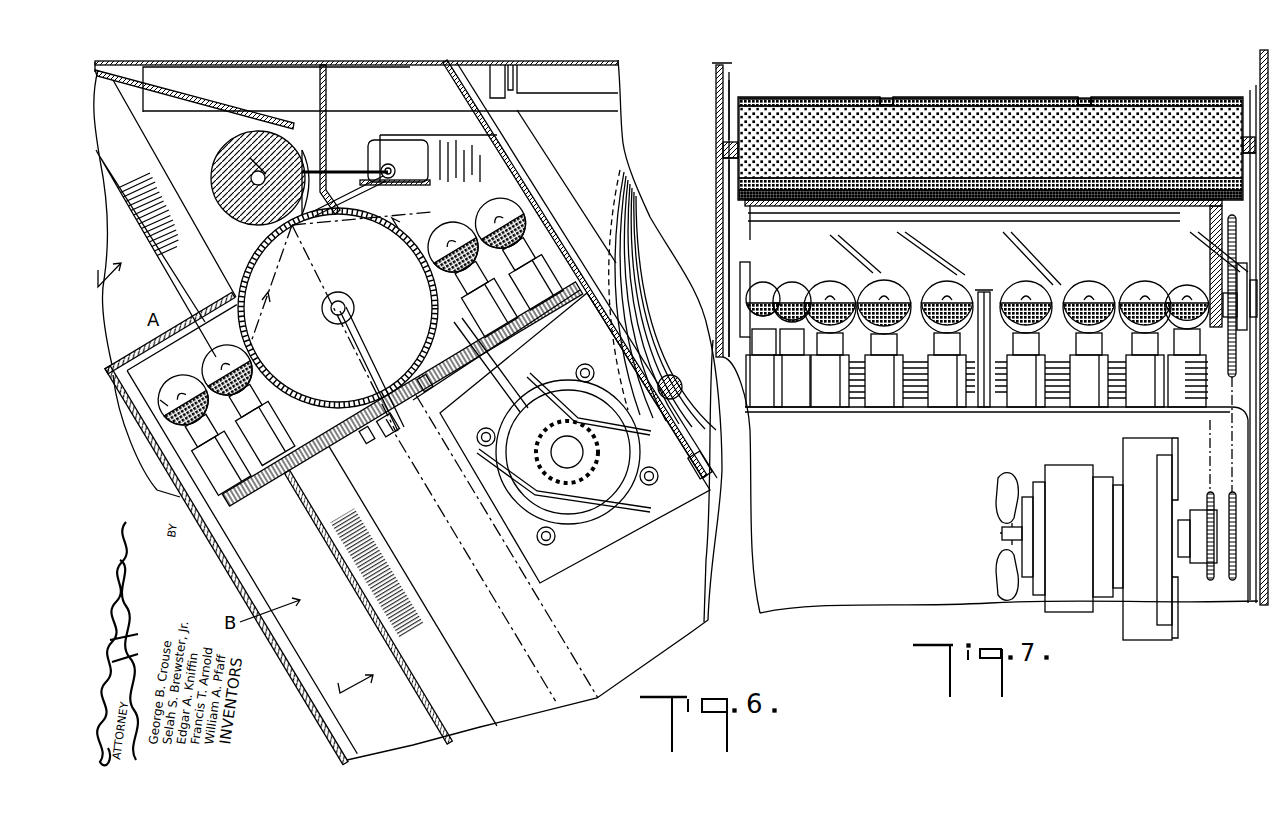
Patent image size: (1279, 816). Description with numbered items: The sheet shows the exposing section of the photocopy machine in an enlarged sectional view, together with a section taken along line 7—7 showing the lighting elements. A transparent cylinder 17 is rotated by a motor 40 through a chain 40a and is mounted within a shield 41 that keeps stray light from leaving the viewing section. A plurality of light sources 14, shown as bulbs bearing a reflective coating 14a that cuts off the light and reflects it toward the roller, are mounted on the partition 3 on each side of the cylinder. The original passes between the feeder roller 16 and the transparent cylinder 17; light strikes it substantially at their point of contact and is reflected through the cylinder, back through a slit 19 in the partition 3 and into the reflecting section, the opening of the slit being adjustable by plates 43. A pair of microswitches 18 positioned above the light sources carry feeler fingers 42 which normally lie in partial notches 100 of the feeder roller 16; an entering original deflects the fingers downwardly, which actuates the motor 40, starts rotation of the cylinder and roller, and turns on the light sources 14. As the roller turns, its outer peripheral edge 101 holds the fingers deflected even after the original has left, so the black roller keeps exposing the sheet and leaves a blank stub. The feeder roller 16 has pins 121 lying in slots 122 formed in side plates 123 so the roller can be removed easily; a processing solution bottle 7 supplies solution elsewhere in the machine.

In FIG. 6, the partition 3 is at (493, 546).
In FIG. 6, the processing solution bottle 7 is at (242, 472).
In FIG. 6, the light source 14 is at (488, 208).
In FIG. 7, the light source 14 is at (1098, 286).
In FIG. 6, the reflective coating 14a is at (194, 429).
In FIG. 7, the reflective coating 14a is at (1172, 300).
In FIG. 6, the feeder roller 16 is at (240, 178).
In FIG. 7, the feeder roller 16 is at (1005, 108).
In FIG. 6, the transparent cylinder 17 is at (318, 401).
In FIG. 7, the transparent cylinder 17 is at (998, 252).
In FIG. 6, the microswitch 18 is at (388, 151).
In FIG. 6, the slit 19 is at (390, 437).
In FIG. 6, the motor 40 is at (578, 515).
In FIG. 7, the motor 40 is at (1086, 597).
In FIG. 6, the chain 40a is at (552, 378).
In FIG. 7, the chain 40a is at (1228, 437).
In FIG. 6, the shield 41 is at (460, 326).
In FIG. 6, the feeler finger 42 is at (342, 186).
In FIG. 6, the adjustable plate 43 is at (368, 441).
In FIG. 6, the partial notch 100 is at (305, 163).
In FIG. 7, the partial notch 100 is at (893, 94).
In FIG. 6, the outer peripheral edge 101 is at (200, 162).
In FIG. 7, the outer peripheral edge 101 is at (854, 95).
In FIG. 7, the pin 121 is at (722, 150).
In FIG. 7, the slot 122 is at (1250, 90).
In FIG. 7, the side plate 123 is at (722, 163).